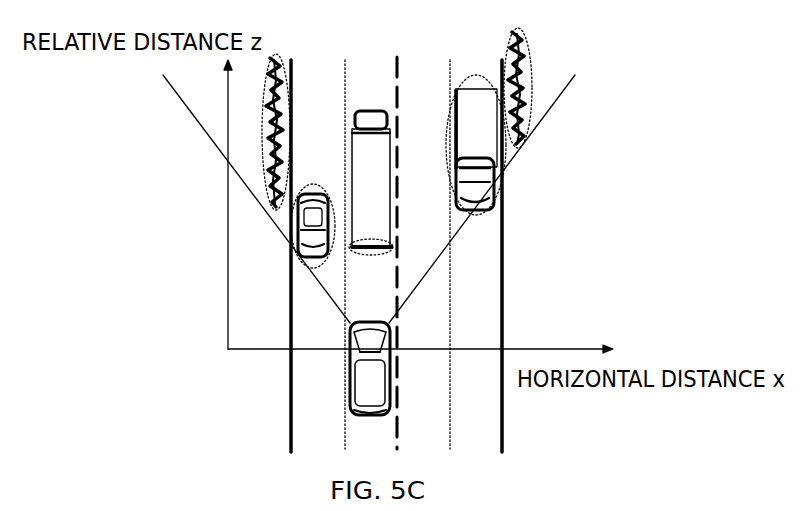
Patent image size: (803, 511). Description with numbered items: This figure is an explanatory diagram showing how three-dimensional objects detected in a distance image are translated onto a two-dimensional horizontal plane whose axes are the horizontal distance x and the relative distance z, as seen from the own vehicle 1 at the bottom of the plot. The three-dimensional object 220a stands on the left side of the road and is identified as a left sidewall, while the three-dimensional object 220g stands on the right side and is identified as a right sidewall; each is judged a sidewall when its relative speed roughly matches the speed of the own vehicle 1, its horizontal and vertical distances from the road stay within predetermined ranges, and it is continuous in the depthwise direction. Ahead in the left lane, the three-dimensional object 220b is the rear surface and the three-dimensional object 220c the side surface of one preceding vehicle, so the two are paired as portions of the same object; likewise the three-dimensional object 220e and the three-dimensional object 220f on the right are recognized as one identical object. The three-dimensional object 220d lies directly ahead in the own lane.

The own vehicle 1 is at (356, 426).
The three-dimensional object 220a is at (266, 136).
The three-dimensional object 220b is at (283, 283).
The three-dimensional object 220c is at (326, 178).
The three-dimensional object 220d is at (382, 257).
The three-dimensional object 220e is at (454, 80).
The three-dimensional object 220f is at (484, 222).
The three-dimensional object 220g is at (562, 56).